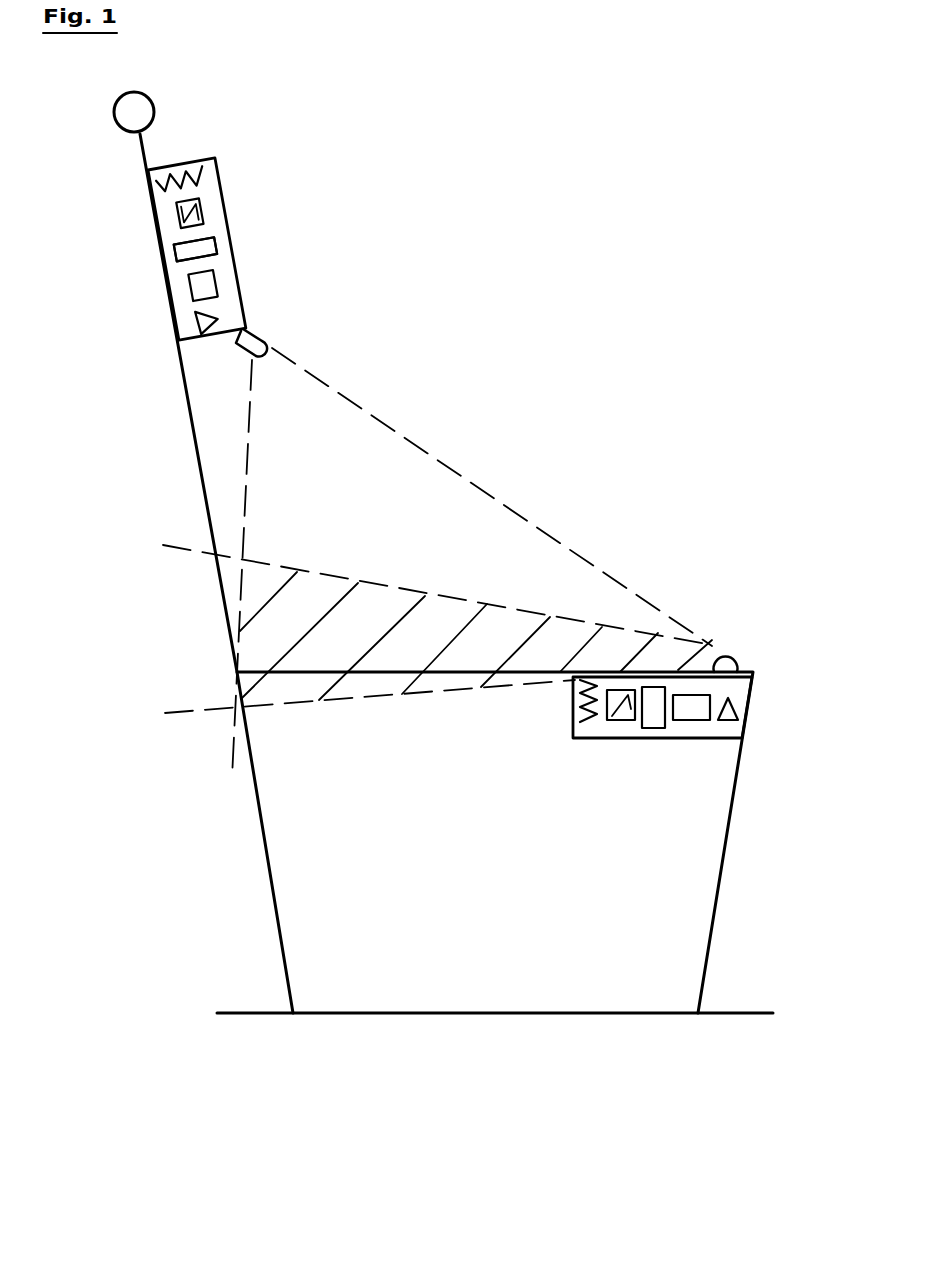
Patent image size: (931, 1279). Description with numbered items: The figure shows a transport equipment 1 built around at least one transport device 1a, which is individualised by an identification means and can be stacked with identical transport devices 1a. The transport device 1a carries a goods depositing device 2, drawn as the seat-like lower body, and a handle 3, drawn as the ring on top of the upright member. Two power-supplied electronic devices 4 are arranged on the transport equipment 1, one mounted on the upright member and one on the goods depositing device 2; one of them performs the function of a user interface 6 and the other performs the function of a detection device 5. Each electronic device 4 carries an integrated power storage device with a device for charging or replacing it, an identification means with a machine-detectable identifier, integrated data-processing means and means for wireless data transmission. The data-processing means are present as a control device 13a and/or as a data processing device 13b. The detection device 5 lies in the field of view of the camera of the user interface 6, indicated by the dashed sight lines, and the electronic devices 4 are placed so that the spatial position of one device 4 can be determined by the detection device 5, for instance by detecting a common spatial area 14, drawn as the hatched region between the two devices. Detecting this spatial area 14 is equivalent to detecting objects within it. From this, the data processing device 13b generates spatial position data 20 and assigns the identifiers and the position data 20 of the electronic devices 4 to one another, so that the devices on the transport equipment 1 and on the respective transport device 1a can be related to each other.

The transport equipment 1 is at (406, 573).
The transport device 1a is at (162, 807).
The goods depositing device 2 is at (508, 957).
The handle 3 is at (137, 105).
The power-supplied electronic device 4 is at (240, 249).
The detection device 5 is at (673, 762).
The user interface 6 is at (252, 208).
The control device 13a is at (648, 713).
The data processing device 13b is at (183, 253).
The spatial area 14 is at (427, 635).
The spatial position data 20 is at (253, 241).